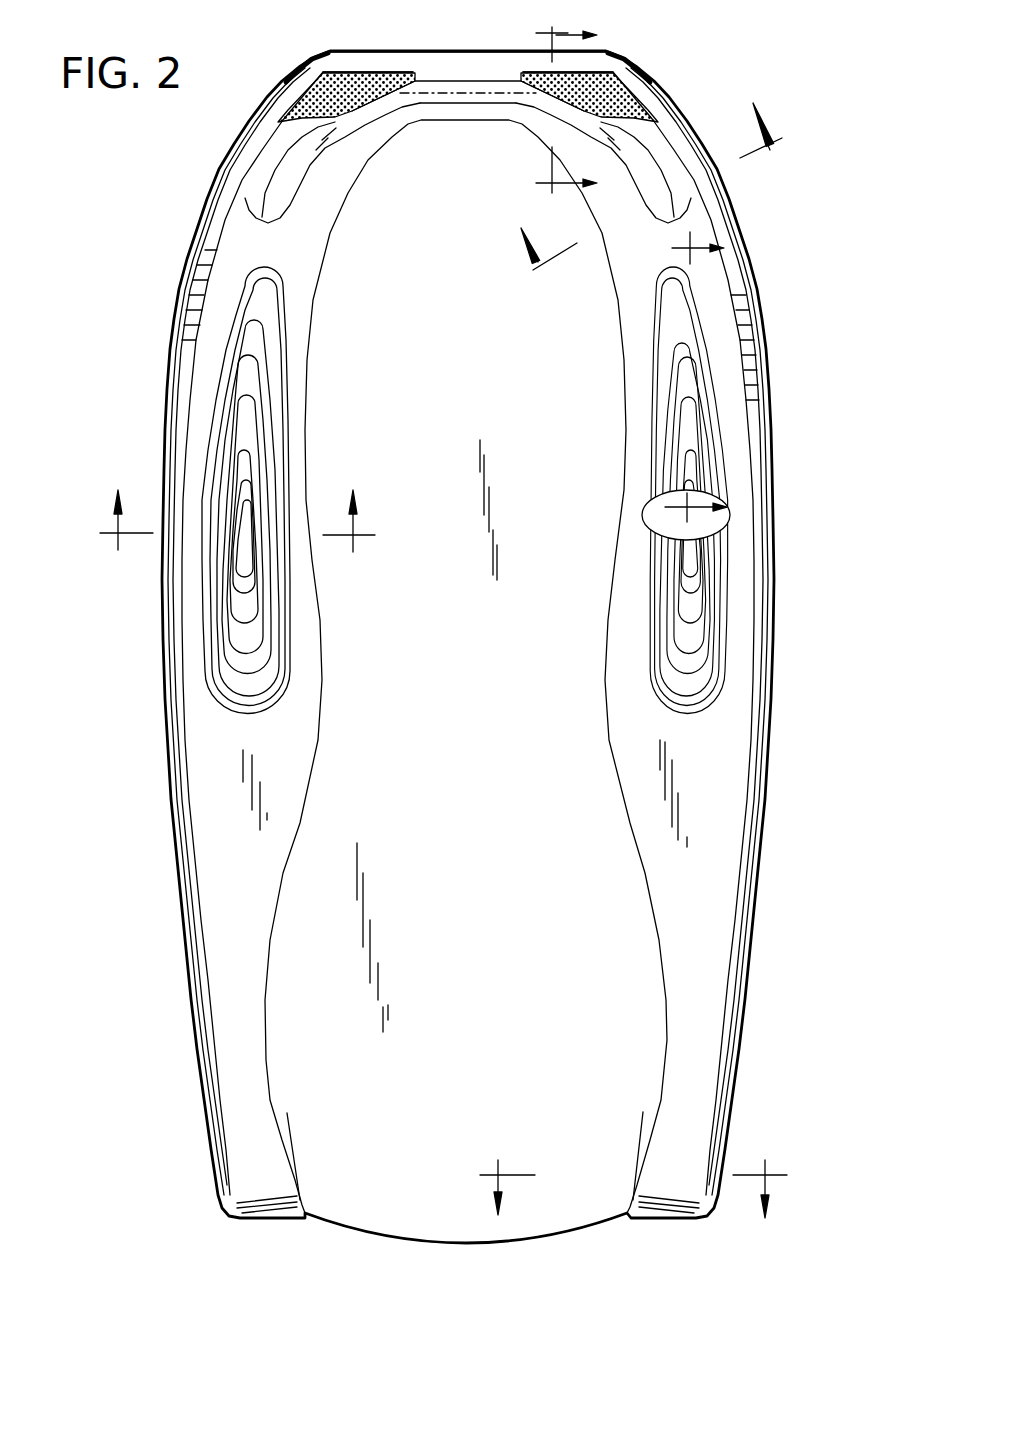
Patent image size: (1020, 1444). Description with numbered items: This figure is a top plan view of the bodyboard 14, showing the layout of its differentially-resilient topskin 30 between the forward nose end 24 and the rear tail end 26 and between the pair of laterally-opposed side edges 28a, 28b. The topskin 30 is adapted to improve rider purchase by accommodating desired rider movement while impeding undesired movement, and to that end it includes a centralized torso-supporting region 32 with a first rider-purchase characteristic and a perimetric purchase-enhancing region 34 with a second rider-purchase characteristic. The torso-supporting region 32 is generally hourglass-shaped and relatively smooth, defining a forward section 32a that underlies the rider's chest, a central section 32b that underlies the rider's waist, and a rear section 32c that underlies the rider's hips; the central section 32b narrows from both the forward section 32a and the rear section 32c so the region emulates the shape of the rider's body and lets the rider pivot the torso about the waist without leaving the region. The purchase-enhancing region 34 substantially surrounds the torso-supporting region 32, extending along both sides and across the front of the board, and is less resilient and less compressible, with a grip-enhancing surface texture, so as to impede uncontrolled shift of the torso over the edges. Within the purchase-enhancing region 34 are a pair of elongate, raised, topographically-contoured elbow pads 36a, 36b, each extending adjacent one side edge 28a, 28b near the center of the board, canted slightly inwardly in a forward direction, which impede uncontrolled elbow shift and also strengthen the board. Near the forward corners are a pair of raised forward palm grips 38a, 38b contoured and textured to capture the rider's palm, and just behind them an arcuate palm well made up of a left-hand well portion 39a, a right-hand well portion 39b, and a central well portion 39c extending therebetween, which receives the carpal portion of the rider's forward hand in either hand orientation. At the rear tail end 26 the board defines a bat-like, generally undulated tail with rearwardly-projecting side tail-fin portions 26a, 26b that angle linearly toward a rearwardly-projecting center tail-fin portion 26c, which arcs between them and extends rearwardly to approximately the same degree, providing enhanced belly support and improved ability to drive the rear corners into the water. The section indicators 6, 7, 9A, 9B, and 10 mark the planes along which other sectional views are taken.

The bodyboard 14 is at (777, 260).
The forward nose end 24 is at (442, 48).
The rear tail end 26 is at (468, 1248).
The side tail-fin portion 26a is at (257, 1210).
The side tail-fin portion 26b is at (672, 1208).
The center tail-fin portion 26c is at (408, 1230).
The side edge 28a is at (160, 392).
The side edge 28b is at (877, 438).
The differentially-resilient topskin 30 is at (215, 818).
The torso-supporting region 32 is at (653, 964).
The forward section 32a is at (478, 366).
The central section 32b is at (487, 765).
The rear section 32c is at (488, 1066).
The purchase-enhancing region 34 is at (737, 837).
The elbow pad 36a is at (220, 622).
The elbow pad 36b is at (715, 598).
The forward palm grip 38a is at (352, 93).
The forward palm grip 38b is at (610, 88).
The left-hand well portion 39a is at (267, 172).
The right-hand well portion 39b is at (675, 182).
The central well portion 39c is at (455, 97).
The section line 6- 6 is at (234, 533).
The section line 7- 7 is at (686, 387).
The section line 9A- 9A is at (664, 207).
The section line 9B- 9B is at (555, 114).
The section line 10- 10 is at (632, 1181).